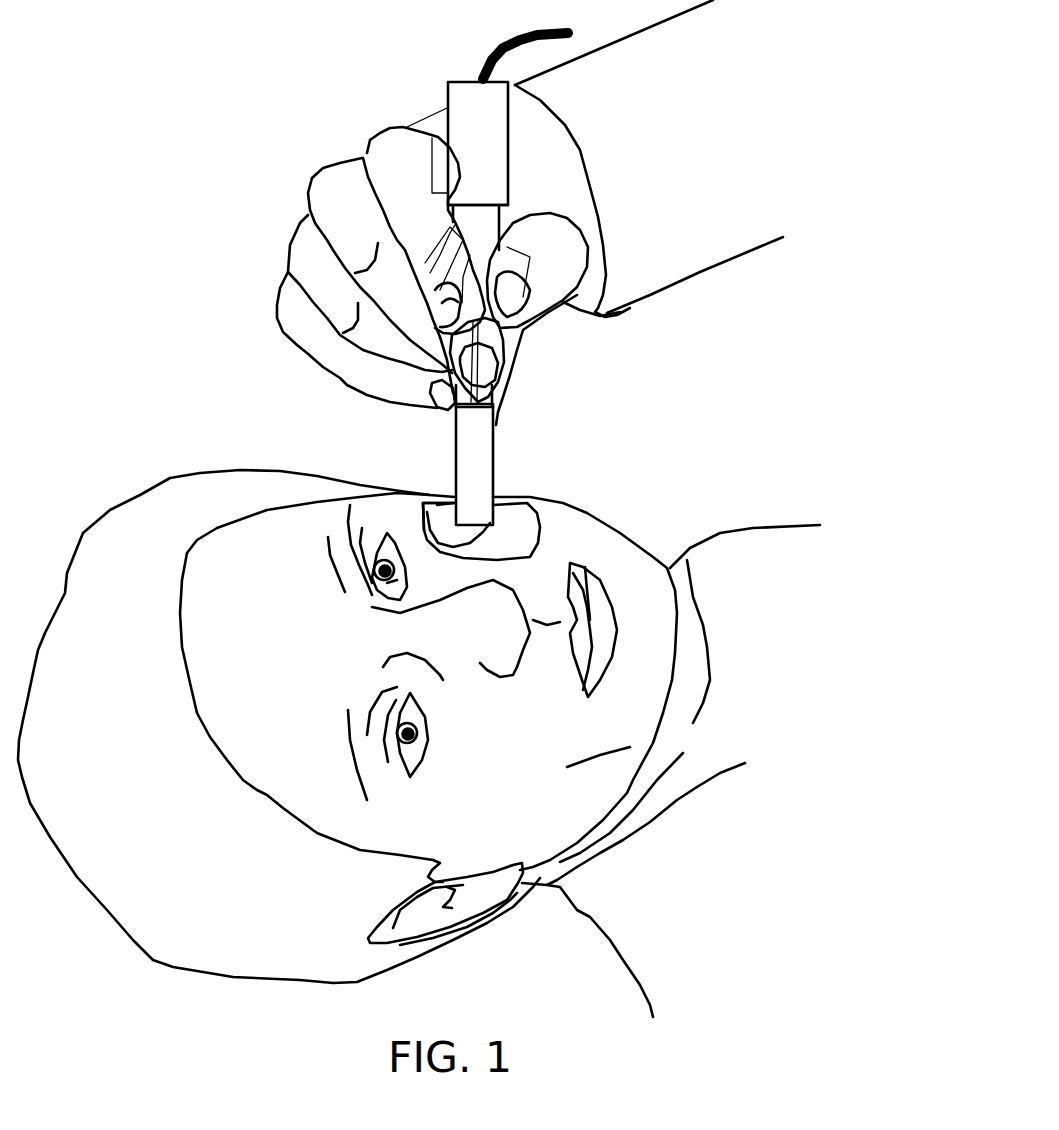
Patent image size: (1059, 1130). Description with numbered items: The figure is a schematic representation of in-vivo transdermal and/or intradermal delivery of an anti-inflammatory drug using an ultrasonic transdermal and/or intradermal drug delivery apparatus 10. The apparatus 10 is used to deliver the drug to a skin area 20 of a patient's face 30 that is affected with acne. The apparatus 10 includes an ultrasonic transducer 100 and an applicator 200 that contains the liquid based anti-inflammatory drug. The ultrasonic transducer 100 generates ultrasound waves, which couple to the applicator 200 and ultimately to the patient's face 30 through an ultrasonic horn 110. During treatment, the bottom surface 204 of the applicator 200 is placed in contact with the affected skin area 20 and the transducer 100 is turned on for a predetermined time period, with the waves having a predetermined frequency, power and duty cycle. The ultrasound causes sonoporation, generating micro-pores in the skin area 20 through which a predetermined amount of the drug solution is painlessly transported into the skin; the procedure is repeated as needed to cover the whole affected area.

The ultrasonic transdermal and/or intradermal drug delivery apparatus 10 is at (685, 393).
The skin area 20 is at (500, 534).
The patient's face 30 is at (552, 795).
The ultrasonic transducer 100 is at (448, 82).
The ultrasonic horn 110 is at (478, 237).
The applicator 200 is at (495, 430).
The bottom surface 204 is at (424, 512).